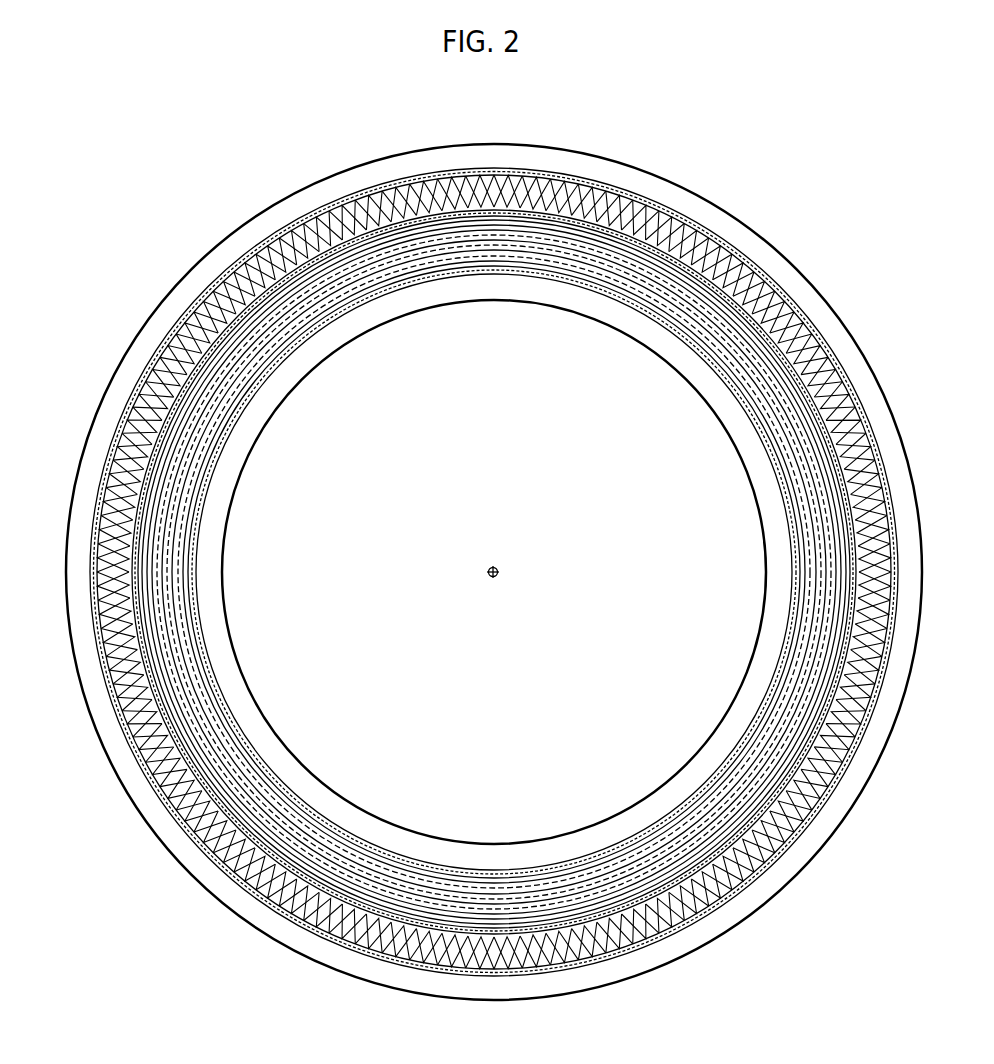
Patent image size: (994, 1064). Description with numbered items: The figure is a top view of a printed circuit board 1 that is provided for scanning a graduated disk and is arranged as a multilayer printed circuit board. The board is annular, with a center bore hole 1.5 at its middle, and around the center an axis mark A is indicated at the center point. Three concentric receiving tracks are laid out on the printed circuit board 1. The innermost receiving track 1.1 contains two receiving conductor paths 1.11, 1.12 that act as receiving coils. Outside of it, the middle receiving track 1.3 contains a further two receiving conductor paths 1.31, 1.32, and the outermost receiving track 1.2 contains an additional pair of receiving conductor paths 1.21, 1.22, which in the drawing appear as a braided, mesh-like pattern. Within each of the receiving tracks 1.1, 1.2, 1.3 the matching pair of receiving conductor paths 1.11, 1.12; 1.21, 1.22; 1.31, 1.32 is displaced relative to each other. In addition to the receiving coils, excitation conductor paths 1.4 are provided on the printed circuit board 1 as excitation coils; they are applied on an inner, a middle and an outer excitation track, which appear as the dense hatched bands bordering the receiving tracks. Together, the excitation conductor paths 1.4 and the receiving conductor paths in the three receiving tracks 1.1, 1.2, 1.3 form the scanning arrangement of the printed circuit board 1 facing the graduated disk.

The printed circuit board 1 is at (223, 227).
The innermost receiving track 1.1 is at (494, 572).
The receiving conductor path 1.11 is at (200, 452).
The receiving conductor path 1.12 is at (210, 447).
The outermost receiving track 1.2 is at (473, 532).
The receiving conductor path 1.21 is at (175, 343).
The receiving conductor path 1.22 is at (160, 347).
The middle receiving track 1.3 is at (494, 572).
The receiving conductor path 1.31 is at (348, 893).
The receiving conductor path 1.32 is at (403, 907).
The excitation conductor paths 1.4 is at (310, 335).
The center bore hole 1.5 is at (494, 572).
The central axis A is at (498, 569).